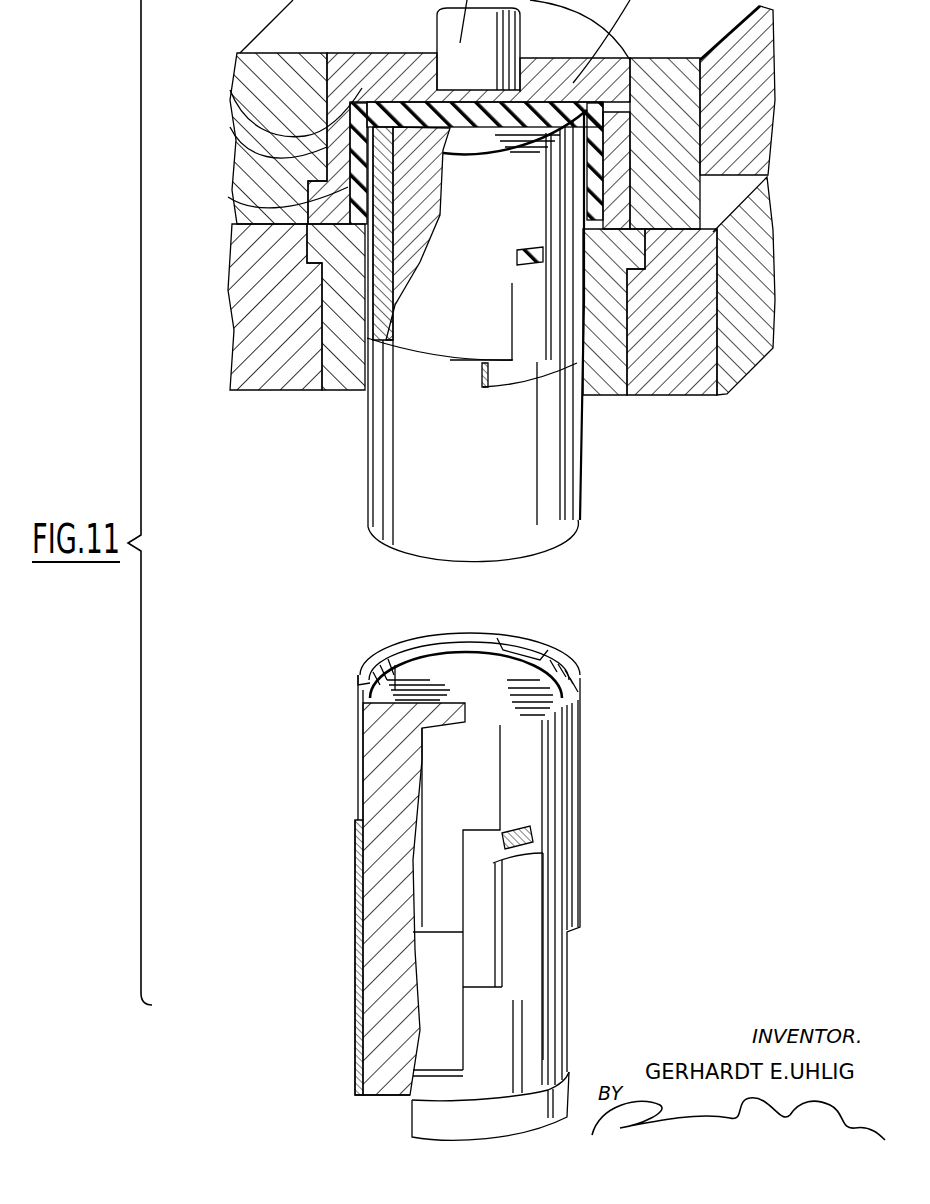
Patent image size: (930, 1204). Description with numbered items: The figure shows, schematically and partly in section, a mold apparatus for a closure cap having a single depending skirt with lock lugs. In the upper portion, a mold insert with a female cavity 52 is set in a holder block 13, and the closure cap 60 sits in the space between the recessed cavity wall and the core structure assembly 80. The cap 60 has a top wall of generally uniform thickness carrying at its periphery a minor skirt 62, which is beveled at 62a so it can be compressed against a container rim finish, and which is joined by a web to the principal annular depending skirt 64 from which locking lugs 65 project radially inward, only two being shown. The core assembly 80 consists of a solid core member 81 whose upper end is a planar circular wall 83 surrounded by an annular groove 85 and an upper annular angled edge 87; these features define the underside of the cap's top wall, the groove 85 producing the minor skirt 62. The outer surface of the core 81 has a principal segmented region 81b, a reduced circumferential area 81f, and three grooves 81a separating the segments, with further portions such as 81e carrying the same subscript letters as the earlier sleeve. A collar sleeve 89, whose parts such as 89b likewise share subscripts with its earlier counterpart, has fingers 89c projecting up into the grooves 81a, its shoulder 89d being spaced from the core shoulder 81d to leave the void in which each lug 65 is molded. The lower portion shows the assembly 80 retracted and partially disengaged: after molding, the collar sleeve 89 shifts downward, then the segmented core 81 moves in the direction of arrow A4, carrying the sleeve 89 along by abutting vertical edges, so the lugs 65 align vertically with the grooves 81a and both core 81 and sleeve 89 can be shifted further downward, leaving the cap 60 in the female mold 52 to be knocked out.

The holder block 13 is at (752, 123).
The female cavity 52 is at (612, 133).
The closure cap 60 is at (228, 117).
The minor skirt 62 is at (228, 97).
The bevel 62a is at (310, 170).
The principal annular depending skirt 64 is at (310, 202).
The locking lugs 65 is at (380, 262).
The core structure assembly 80 is at (597, 497).
The solid core member 81 is at (397, 753).
The grooves 81a is at (352, 683).
The principal segmented region 81b is at (492, 203).
The shoulder 81d is at (537, 250).
The sleeve ledge 81e is at (447, 364).
The reduced circumferential area 81f is at (483, 893).
The planar circular wall 83 is at (473, 690).
The annular groove 85 is at (393, 642).
The upper annular angled edge 87 is at (417, 647).
The collar sleeve 89 is at (542, 335).
The tongue flange 89b is at (510, 380).
The fingers 89c is at (563, 173).
The shoulder 89d is at (514, 300).
The arrow A4 is at (424, 905).